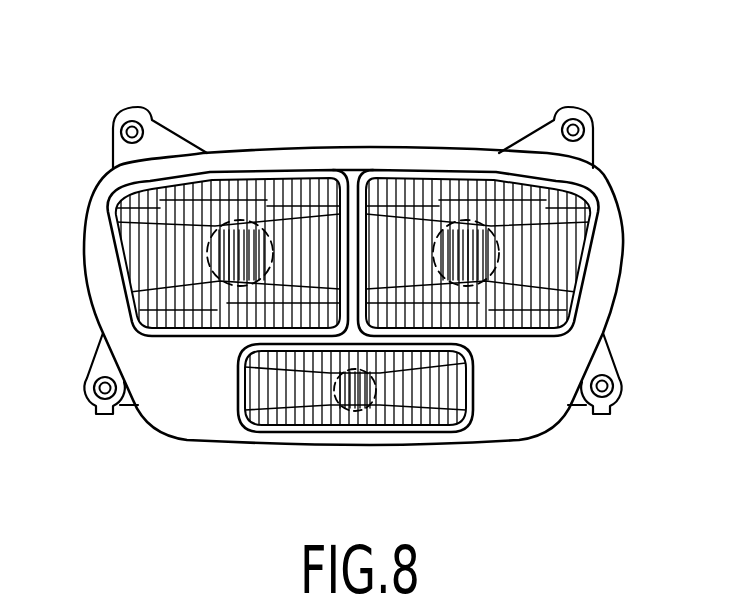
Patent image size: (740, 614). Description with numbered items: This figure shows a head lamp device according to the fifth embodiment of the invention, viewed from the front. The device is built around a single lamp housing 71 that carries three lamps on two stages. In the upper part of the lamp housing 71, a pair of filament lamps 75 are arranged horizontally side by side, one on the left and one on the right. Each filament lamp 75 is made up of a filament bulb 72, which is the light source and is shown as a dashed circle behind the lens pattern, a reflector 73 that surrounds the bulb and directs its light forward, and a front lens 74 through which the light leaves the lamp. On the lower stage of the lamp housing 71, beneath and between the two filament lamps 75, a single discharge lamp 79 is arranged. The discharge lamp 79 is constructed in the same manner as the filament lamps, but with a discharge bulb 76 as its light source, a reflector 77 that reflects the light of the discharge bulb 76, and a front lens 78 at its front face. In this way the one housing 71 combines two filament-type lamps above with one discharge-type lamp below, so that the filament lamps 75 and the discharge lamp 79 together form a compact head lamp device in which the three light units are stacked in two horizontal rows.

The lamp housing 71 is at (358, 148).
The filament bulb 72 is at (223, 218).
The reflector 73 is at (177, 247).
The front lens 74 is at (157, 253).
The filament lamp 75 is at (349, 171).
The discharge bulb 76 is at (357, 410).
The reflector 77 is at (413, 390).
The front lens 78 is at (443, 388).
The discharge lamp 79 is at (376, 432).